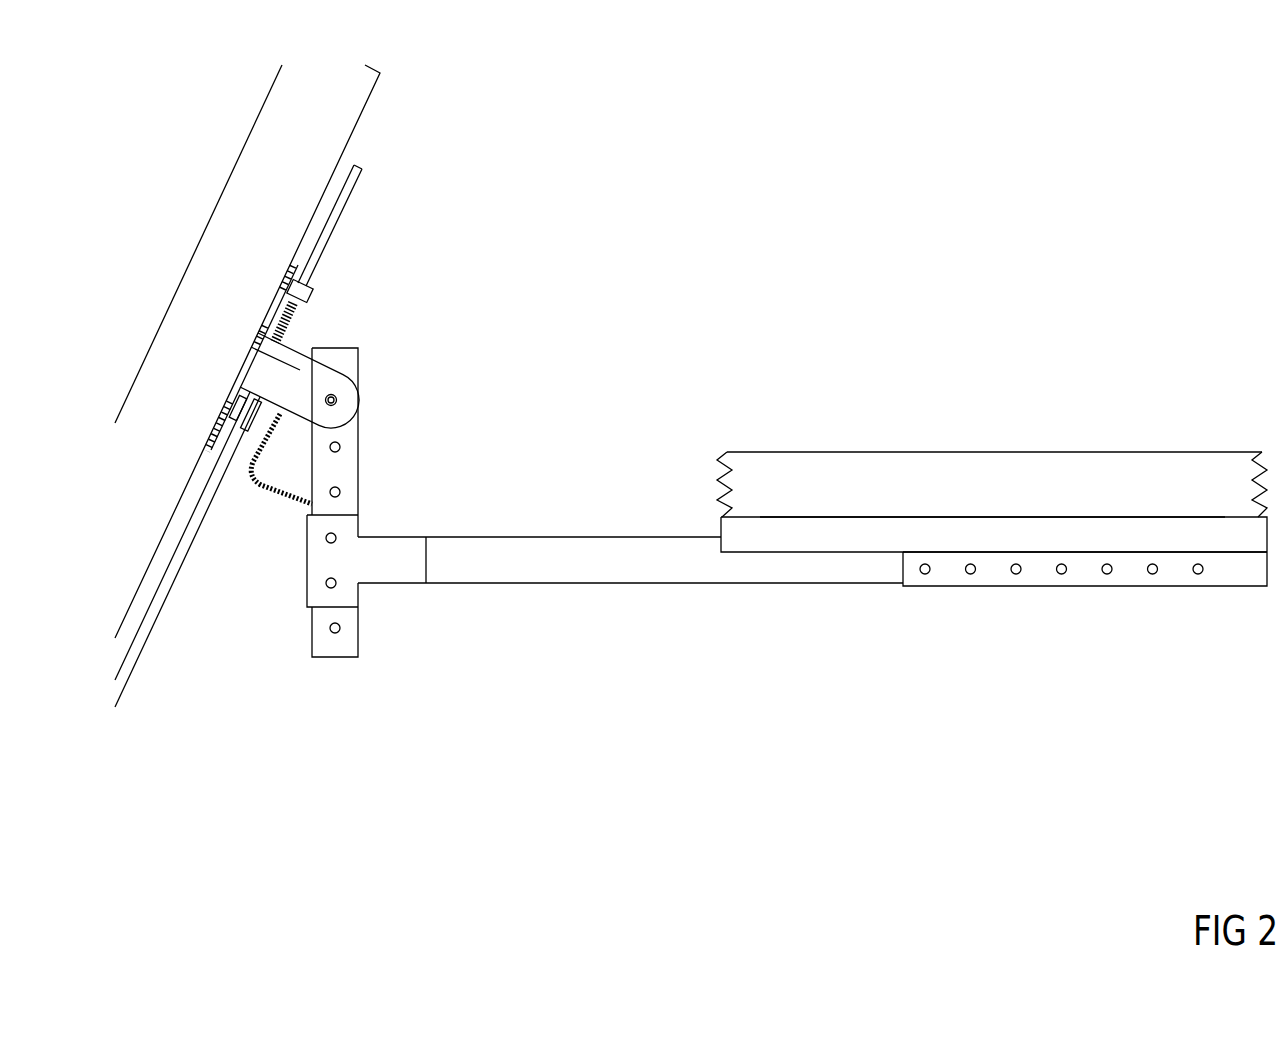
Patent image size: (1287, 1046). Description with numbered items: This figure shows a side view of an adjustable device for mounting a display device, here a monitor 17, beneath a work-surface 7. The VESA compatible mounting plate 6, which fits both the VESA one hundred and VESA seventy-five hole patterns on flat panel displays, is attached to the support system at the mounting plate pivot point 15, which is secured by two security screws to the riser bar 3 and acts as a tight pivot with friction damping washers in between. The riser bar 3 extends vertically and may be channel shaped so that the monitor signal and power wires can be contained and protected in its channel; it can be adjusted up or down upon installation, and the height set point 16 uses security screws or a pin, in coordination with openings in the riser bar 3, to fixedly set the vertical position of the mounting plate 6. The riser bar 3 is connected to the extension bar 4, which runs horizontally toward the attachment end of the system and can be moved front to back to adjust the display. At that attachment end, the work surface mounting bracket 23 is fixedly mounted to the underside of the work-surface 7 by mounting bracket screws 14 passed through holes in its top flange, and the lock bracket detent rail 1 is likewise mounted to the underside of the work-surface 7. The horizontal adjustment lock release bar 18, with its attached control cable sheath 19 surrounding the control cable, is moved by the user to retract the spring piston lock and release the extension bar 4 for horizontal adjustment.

The Lock bracket detent rail 1 is at (1062, 588).
The Riser bar 3 is at (360, 468).
The Extension bar 4 is at (598, 585).
The Mounting plate 6 is at (359, 392).
The Work-surface 7 is at (993, 452).
The Mounting bracket screws 14 is at (1218, 519).
The Mounting plate pivot point 15 is at (334, 396).
The Height set point 16 is at (326, 540).
The monitor 17 is at (355, 128).
The Horizontal adjustment lock release bar 18 is at (148, 648).
The Control cable sheath 19 is at (257, 493).
The work surface Mounting bracket 23 is at (1163, 555).